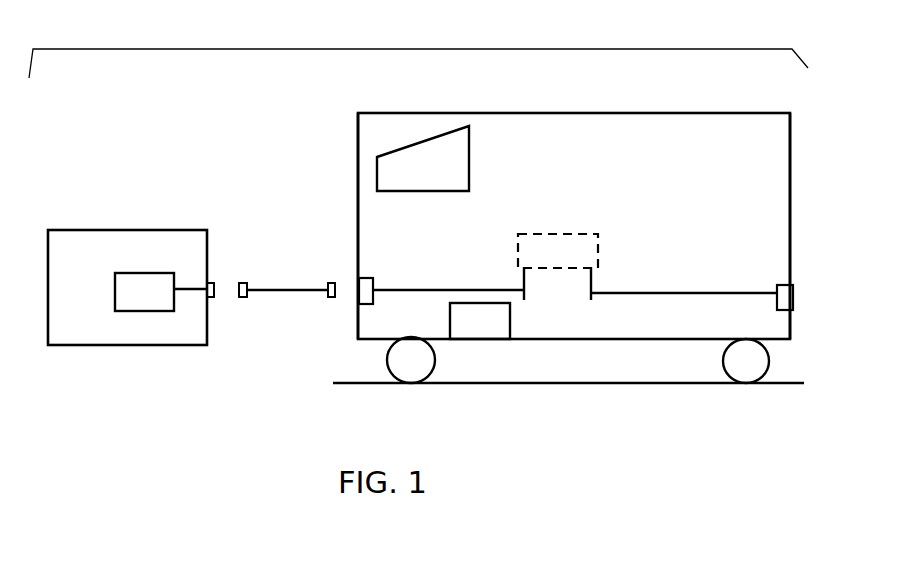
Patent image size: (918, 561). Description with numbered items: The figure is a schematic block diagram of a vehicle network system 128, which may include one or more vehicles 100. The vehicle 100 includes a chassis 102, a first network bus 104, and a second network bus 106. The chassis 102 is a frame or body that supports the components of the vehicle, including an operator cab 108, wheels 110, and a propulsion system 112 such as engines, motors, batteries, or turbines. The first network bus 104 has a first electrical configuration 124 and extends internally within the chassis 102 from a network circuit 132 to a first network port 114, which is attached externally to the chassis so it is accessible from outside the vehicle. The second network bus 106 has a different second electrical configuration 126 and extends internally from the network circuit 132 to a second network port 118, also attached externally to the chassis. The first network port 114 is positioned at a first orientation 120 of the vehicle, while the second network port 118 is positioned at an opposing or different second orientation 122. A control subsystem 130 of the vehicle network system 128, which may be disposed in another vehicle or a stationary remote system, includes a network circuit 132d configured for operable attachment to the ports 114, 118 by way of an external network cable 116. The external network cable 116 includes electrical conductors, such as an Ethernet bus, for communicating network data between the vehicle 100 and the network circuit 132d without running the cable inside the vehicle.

The vehicle 100 is at (353, 108).
The chassis 102 is at (582, 115).
The first network bus 104 is at (448, 259).
The second network bus 106 is at (684, 280).
The operator cab 108 is at (470, 157).
The wheels 110 is at (435, 363).
The propulsion system 112 is at (512, 325).
The first network port 114 is at (356, 298).
The external network cable 116 is at (283, 287).
The second network port 118 is at (795, 295).
The first orientation 120 is at (358, 197).
The second orientation 122 is at (790, 195).
The first electrical configuration 124 is at (409, 287).
The second electrical configuration 126 is at (645, 294).
The vehicle network system 128 is at (375, 48).
The control subsystem 130 is at (131, 264).
The network circuit 132 is at (557, 232).
The network circuit 132d is at (143, 272).